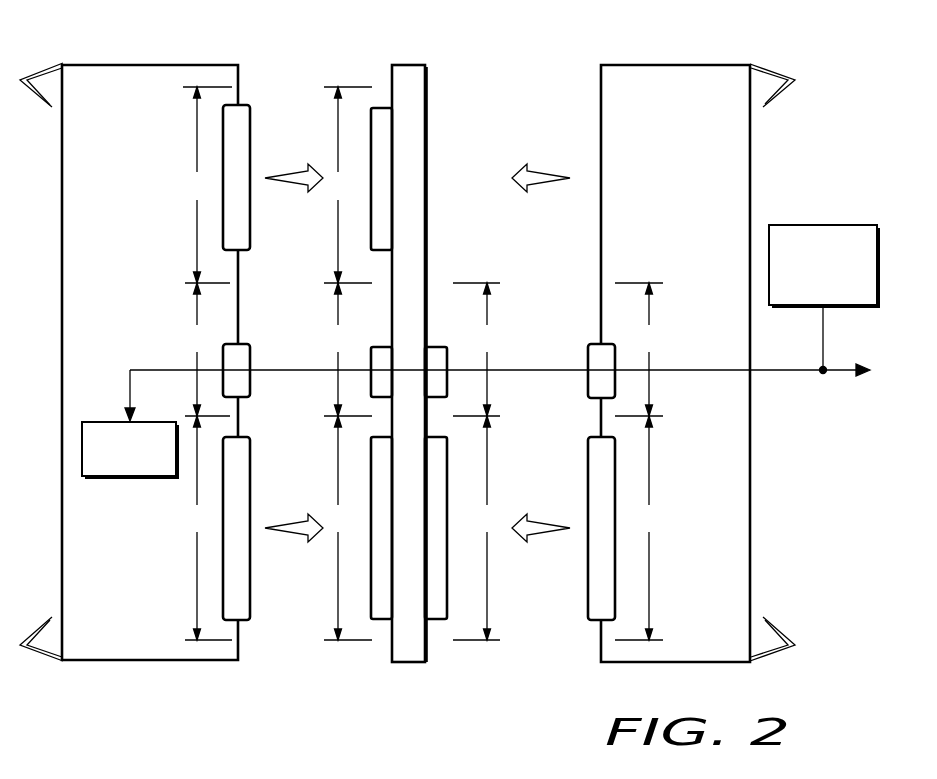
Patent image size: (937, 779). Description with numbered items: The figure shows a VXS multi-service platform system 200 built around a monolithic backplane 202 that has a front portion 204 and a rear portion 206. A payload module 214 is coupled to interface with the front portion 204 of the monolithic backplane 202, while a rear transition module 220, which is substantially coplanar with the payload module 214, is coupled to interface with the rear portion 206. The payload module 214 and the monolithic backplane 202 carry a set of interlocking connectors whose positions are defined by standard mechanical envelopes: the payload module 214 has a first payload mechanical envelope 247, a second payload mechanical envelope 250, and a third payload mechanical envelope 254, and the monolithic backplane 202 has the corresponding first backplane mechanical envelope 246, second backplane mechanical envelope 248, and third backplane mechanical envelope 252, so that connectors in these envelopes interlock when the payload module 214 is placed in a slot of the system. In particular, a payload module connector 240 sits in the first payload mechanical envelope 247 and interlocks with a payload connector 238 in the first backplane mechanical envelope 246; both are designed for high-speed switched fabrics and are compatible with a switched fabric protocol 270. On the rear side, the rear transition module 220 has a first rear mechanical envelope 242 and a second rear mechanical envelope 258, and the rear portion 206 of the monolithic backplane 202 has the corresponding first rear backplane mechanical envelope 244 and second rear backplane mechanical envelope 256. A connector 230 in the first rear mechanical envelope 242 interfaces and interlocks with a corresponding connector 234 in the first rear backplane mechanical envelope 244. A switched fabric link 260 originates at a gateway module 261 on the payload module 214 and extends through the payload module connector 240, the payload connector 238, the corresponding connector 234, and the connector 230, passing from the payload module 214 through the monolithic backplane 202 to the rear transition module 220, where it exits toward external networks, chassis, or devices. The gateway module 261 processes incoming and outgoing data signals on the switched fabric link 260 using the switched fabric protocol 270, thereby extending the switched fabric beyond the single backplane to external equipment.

The VXS multi-service platform system 200 is at (555, 689).
The monolithic backplane 202 is at (414, 130).
The front portion 204 is at (358, 70).
The rear portion 206 is at (488, 126).
The payload module 214 is at (150, 65).
The rear transition module 220 is at (752, 158).
The connector 230 is at (596, 388).
The corresponding connector 234 is at (440, 348).
The payload connector 238 is at (382, 382).
The payload module connector 240 is at (238, 352).
The RP0 mechanical envelope 242 is at (657, 325).
The RJ0 mechanical envelope 244 is at (498, 325).
The J0 mechanical envelope 246 is at (330, 328).
The P0 mechanical envelope 247 is at (183, 330).
The J1 mechanical envelope 248 is at (330, 187).
The P1 mechanical envelope 250 is at (190, 178).
The J2 mechanical envelope 252 is at (330, 507).
The P2 mechanical envelope 254 is at (186, 530).
The RJ2 mechanical envelope 256 is at (492, 503).
The RP2 mechanical envelope 258 is at (652, 500).
The switched fabric link 260 is at (772, 368).
The gateway module 261 is at (134, 480).
The switched fabric protocol 270 is at (822, 225).